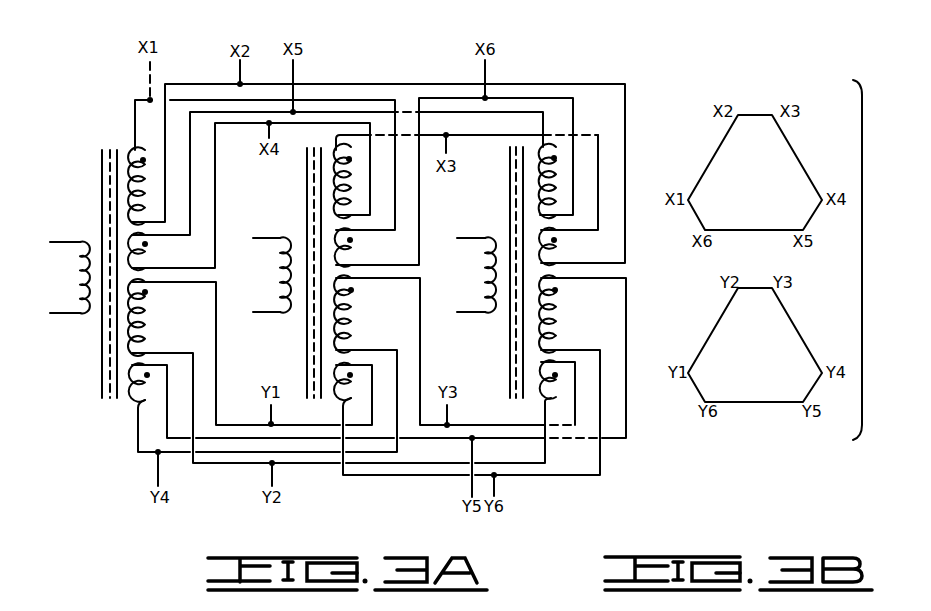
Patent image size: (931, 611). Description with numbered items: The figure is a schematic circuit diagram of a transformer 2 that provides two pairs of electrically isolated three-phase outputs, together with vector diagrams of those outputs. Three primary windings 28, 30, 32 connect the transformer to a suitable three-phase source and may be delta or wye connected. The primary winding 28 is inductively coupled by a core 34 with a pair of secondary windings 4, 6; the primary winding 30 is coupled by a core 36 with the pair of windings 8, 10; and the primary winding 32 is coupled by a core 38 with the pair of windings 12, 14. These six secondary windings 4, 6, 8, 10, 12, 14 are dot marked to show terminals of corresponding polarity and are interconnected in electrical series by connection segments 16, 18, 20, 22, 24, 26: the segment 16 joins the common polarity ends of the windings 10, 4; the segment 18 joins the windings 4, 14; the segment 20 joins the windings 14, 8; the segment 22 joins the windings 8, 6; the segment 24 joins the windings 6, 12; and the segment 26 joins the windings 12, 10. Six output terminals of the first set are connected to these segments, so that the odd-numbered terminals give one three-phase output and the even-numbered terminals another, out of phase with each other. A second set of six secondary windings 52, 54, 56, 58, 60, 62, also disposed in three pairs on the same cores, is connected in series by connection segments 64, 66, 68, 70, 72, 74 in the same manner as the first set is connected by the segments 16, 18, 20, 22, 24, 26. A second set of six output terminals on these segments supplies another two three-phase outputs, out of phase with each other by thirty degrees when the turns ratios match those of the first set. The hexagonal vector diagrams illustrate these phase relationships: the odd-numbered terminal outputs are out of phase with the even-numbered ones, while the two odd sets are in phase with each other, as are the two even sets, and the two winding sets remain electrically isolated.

The transformer 2 is at (537, 74).
The secondary winding 4 is at (138, 186).
The secondary winding 6 is at (144, 256).
The secondary winding 8 is at (342, 182).
The secondary winding 10 is at (347, 256).
The secondary winding 12 is at (545, 180).
The secondary winding 14 is at (555, 250).
The connection segment 16 is at (135, 118).
The connection segment 18 is at (180, 84).
The connection segment 20 is at (462, 136).
The connection segment 22 is at (225, 125).
The connection segment 24 is at (320, 112).
The connection segment 26 is at (455, 97).
The primary winding 28 is at (83, 273).
The primary winding 30 is at (282, 272).
The primary winding 32 is at (484, 272).
The core 34 is at (102, 190).
The core 36 is at (307, 190).
The core 38 is at (510, 190).
The secondary winding 52 is at (147, 317).
The secondary winding 54 is at (140, 390).
The secondary winding 56 is at (352, 317).
The secondary winding 58 is at (342, 387).
The secondary winding 60 is at (560, 315).
The secondary winding 62 is at (545, 383).
The connection segment 64 is at (231, 425).
The connection segment 66 is at (248, 464).
The connection segment 68 is at (462, 425).
The connection segment 70 is at (138, 436).
The connection segment 72 is at (403, 439).
The connection segment 74 is at (533, 476).